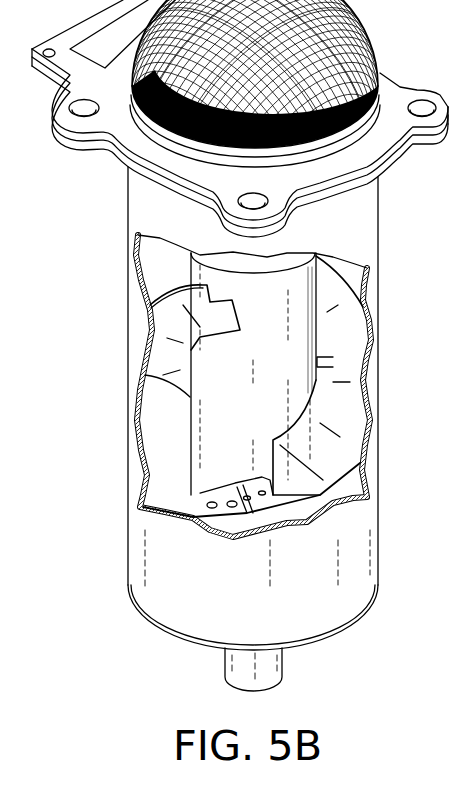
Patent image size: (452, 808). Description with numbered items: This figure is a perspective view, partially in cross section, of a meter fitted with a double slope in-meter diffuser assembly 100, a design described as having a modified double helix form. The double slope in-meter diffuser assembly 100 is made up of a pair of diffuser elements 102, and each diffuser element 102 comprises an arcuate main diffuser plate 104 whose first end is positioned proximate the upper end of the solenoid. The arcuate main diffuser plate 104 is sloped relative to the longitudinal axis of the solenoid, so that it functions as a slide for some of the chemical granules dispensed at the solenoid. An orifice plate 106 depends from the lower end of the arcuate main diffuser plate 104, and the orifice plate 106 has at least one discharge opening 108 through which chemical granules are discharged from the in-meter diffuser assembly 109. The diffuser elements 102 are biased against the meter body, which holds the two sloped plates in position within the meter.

The double slope in-meter diffuser assembly 100 is at (162, 278).
The diffuser element 102 is at (173, 328).
The arcuate main diffuser plate 104 is at (143, 412).
The orifice plate 106 is at (222, 512).
The discharge opening 108 is at (143, 508).
The in-meter diffuser assembly 109 is at (363, 615).